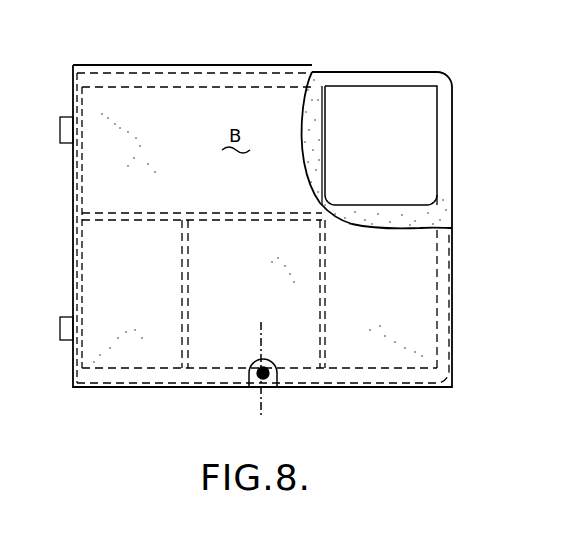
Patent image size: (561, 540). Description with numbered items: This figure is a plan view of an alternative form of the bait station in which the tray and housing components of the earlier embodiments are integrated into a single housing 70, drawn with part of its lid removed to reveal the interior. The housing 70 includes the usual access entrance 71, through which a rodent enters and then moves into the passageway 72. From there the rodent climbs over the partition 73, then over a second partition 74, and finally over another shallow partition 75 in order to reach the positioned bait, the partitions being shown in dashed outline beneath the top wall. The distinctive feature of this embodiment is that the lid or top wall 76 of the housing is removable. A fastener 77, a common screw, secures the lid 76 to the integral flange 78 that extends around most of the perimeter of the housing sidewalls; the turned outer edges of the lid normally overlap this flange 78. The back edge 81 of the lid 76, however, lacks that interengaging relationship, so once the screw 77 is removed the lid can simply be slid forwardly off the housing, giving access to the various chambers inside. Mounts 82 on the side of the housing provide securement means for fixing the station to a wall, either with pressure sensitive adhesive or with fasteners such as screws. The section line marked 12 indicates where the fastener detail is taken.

The housing 70 is at (455, 183).
The access entrance 71 is at (392, 100).
The passageway 72 is at (398, 309).
The partition 73 is at (319, 291).
The second partition 74 is at (188, 303).
The shallow partition 75 is at (163, 218).
The lid 76 is at (417, 267).
The fastener 77 is at (264, 380).
The integral flange 78 is at (451, 100).
The back edge 81 is at (73, 232).
The mounts 82 is at (62, 143).
The section line 12- 12 is at (261, 322).